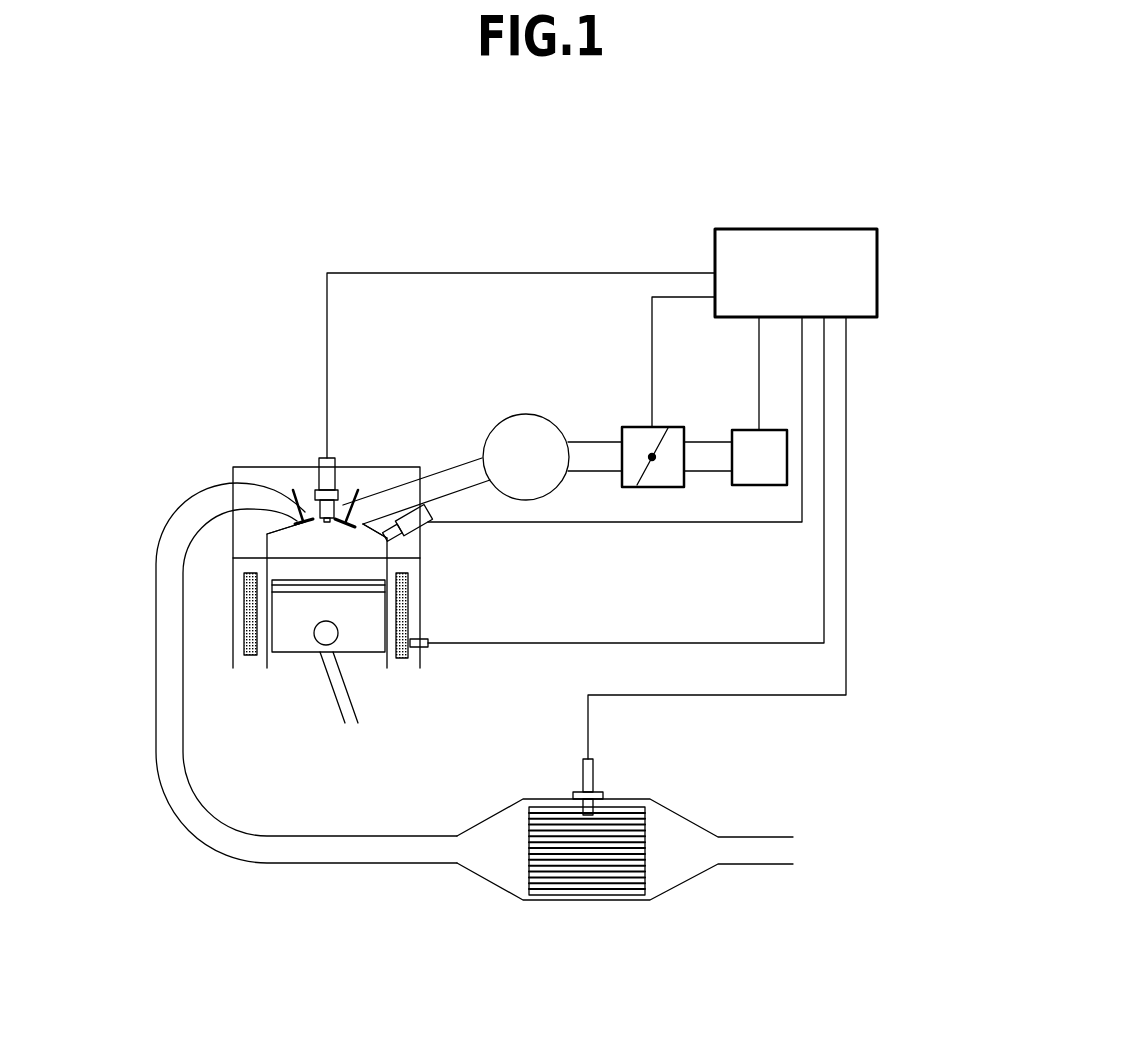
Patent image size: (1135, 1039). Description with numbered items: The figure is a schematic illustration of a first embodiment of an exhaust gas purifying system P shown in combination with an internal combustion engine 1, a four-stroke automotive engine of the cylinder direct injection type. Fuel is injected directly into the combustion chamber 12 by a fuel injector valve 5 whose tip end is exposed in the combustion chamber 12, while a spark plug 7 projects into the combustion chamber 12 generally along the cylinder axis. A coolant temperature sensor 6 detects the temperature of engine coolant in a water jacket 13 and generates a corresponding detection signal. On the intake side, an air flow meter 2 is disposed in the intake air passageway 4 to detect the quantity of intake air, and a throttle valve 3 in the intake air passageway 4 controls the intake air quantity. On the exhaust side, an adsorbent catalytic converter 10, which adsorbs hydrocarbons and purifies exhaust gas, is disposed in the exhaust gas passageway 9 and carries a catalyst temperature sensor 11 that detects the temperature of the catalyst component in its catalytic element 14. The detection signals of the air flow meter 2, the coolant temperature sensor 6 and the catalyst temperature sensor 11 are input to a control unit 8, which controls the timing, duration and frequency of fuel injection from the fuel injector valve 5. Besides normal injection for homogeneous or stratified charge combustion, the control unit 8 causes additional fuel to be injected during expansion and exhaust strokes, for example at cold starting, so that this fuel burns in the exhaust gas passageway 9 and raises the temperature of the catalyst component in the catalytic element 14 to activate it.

The internal combustion engine 1 is at (237, 467).
The air flow meter 2 is at (742, 430).
The throttle valve 3 is at (633, 427).
The intake air passageway 4 is at (462, 470).
The fuel injector valve 5 is at (430, 524).
The coolant temperature sensor 6 is at (428, 647).
The spark plug 7 is at (322, 457).
The control unit 8 is at (817, 229).
The exhaust gas passageway 9 is at (172, 662).
The adsorbent catalytic converter 10 is at (551, 799).
The catalyst temperature sensor 11 is at (595, 770).
The combustion chamber 12 is at (308, 539).
The water jacket 13 is at (248, 656).
The catalytic element 14 is at (620, 880).
The exhaust gas purifying system P is at (867, 478).